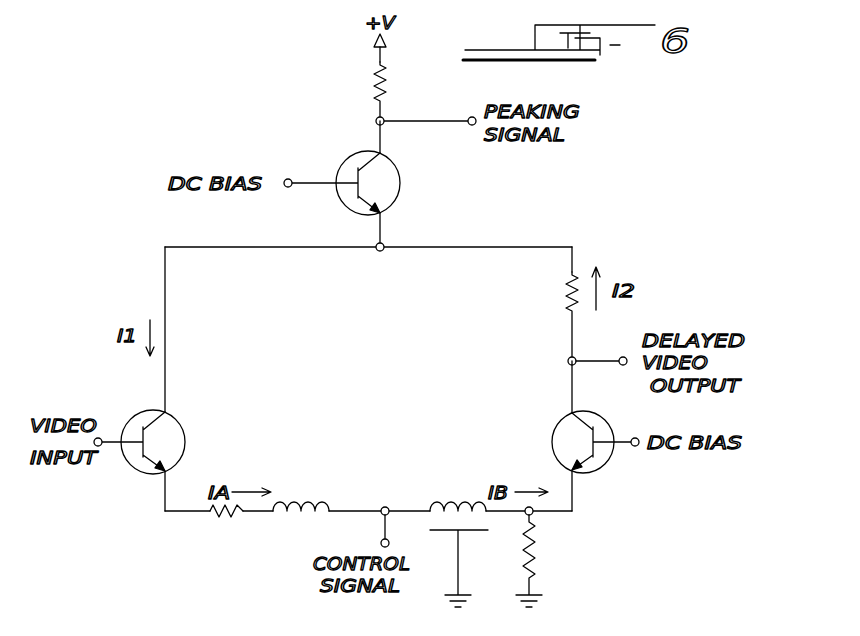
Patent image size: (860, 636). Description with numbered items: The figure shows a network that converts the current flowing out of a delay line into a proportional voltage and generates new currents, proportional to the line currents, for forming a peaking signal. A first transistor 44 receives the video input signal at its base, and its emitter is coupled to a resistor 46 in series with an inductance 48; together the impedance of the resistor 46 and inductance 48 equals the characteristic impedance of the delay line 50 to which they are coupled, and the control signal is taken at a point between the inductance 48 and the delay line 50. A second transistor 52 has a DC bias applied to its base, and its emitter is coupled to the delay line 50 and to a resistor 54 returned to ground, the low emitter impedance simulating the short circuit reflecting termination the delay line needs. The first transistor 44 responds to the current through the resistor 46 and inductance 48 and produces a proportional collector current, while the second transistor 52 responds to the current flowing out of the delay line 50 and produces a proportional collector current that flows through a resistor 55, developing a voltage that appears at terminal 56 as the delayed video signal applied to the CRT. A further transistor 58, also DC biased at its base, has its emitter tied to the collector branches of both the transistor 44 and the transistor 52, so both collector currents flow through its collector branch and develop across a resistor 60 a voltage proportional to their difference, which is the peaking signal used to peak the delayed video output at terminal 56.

The first transistor 44 is at (182, 426).
The resistor 46 is at (213, 516).
The inductance 48 is at (283, 514).
The delay line 50 is at (487, 516).
The second transistor 52 is at (612, 431).
The resistor 54 is at (536, 547).
The resistor 55 is at (562, 293).
The terminal 56 is at (620, 368).
The transistor 58 is at (400, 189).
The resistor 60 is at (387, 96).